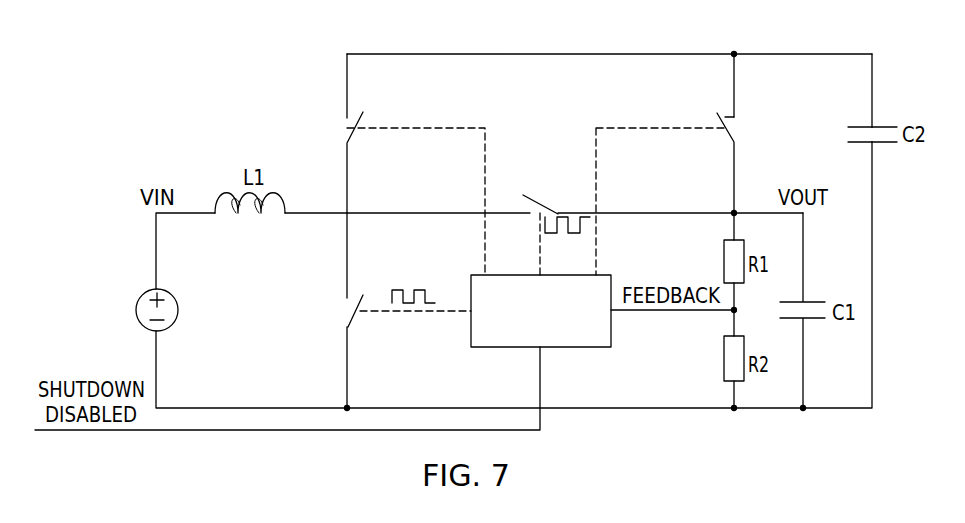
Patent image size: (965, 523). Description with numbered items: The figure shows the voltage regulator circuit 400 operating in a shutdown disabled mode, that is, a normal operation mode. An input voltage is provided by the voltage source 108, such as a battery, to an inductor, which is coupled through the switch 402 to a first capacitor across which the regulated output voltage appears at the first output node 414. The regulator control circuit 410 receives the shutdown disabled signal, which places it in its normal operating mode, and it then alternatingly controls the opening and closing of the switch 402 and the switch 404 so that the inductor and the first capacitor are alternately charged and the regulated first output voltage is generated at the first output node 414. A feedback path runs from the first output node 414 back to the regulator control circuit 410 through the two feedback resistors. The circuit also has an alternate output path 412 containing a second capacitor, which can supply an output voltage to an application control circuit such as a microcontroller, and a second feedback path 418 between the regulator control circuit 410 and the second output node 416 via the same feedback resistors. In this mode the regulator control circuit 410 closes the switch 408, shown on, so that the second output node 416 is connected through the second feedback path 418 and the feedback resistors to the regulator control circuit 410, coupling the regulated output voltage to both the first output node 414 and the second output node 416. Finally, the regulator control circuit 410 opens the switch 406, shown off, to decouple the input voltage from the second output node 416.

The voltage regulator circuit 400 is at (122, 40).
The alternate output path 412 is at (413, 48).
The second output node 416 is at (737, 52).
The second feedback path 418 is at (737, 83).
The switch 408 is at (731, 136).
The first output node 414 is at (732, 210).
The switch 406 is at (347, 138).
The switch 402 is at (527, 194).
The switch 404 is at (347, 322).
The regulator control circuit 410 is at (580, 350).
The voltage source 108 is at (136, 310).